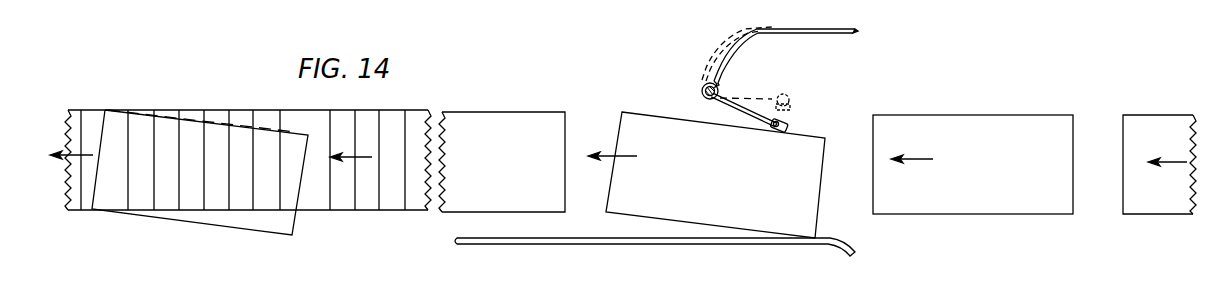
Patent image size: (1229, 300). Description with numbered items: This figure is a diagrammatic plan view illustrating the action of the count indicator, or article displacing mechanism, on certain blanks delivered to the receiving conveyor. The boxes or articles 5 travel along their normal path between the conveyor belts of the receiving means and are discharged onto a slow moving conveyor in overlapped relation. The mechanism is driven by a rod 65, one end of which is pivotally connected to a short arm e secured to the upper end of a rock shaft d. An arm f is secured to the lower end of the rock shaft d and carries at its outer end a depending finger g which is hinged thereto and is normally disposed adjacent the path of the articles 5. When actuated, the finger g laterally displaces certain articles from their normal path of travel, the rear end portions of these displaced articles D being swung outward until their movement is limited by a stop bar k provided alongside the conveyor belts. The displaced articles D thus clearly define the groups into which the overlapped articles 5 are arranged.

The boxes or articles 5 is at (467, 112).
The laterally displaced articles D is at (292, 235).
The stop bar k is at (668, 241).
The rock shaft d is at (703, 86).
The short arm e is at (738, 64).
The arm f is at (722, 106).
The depending finger g is at (790, 125).
The rod 65 is at (838, 33).